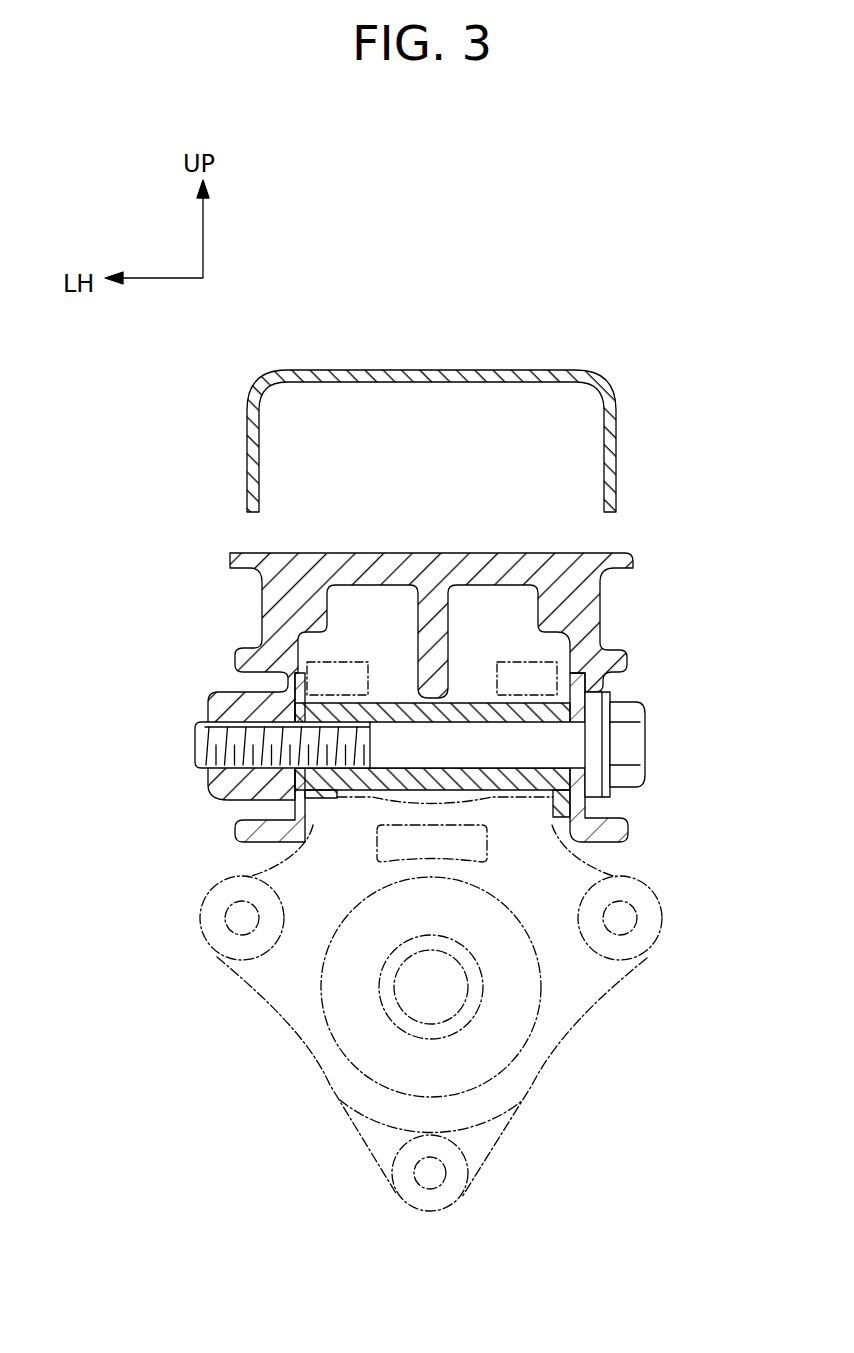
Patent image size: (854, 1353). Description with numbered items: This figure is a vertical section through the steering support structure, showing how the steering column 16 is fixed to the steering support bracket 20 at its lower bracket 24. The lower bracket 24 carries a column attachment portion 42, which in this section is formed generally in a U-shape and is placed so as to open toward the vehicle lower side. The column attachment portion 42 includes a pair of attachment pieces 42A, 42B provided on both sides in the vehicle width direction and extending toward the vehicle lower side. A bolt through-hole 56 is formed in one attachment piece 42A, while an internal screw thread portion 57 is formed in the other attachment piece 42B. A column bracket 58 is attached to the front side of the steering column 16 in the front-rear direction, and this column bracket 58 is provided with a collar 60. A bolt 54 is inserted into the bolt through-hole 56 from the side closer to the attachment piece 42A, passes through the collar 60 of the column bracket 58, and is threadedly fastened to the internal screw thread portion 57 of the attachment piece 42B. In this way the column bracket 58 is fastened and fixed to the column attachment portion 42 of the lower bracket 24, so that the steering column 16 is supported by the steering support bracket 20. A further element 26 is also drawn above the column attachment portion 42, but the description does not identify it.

The steering column 16 is at (348, 1064).
The steering support bracket 20 is at (420, 630).
The lower bracket 24 is at (386, 552).
The cover 26 is at (485, 368).
The column attachment portion 42 is at (439, 678).
The attachment piece 42A is at (586, 684).
The attachment piece 42B is at (246, 793).
The bolt 54 is at (632, 748).
The bolt through-hole 56 is at (578, 724).
The internal screw thread portion 57 is at (195, 745).
The column bracket 58 is at (282, 1008).
The collar 60 is at (467, 712).